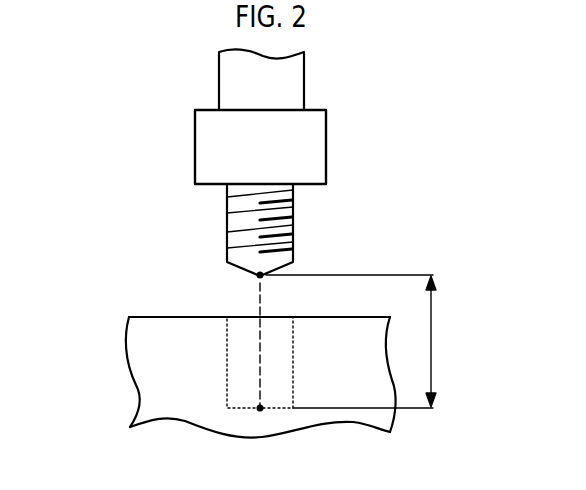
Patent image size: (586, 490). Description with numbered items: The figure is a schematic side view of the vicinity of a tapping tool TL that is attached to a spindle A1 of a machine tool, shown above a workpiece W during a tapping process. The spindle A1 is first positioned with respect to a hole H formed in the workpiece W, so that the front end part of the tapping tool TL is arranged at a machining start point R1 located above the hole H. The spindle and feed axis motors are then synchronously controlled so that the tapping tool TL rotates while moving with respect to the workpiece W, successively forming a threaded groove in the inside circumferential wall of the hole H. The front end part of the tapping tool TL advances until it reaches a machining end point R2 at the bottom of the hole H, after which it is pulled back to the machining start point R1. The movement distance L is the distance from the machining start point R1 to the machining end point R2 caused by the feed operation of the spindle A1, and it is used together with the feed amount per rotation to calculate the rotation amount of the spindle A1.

The spindle A1 is at (292, 85).
The tapping tool TL is at (292, 216).
The machining start point R1 is at (257, 275).
The workpiece W is at (128, 355).
The hole H is at (225, 382).
The machining end point R2 is at (260, 410).
The movement distance L is at (356, 341).